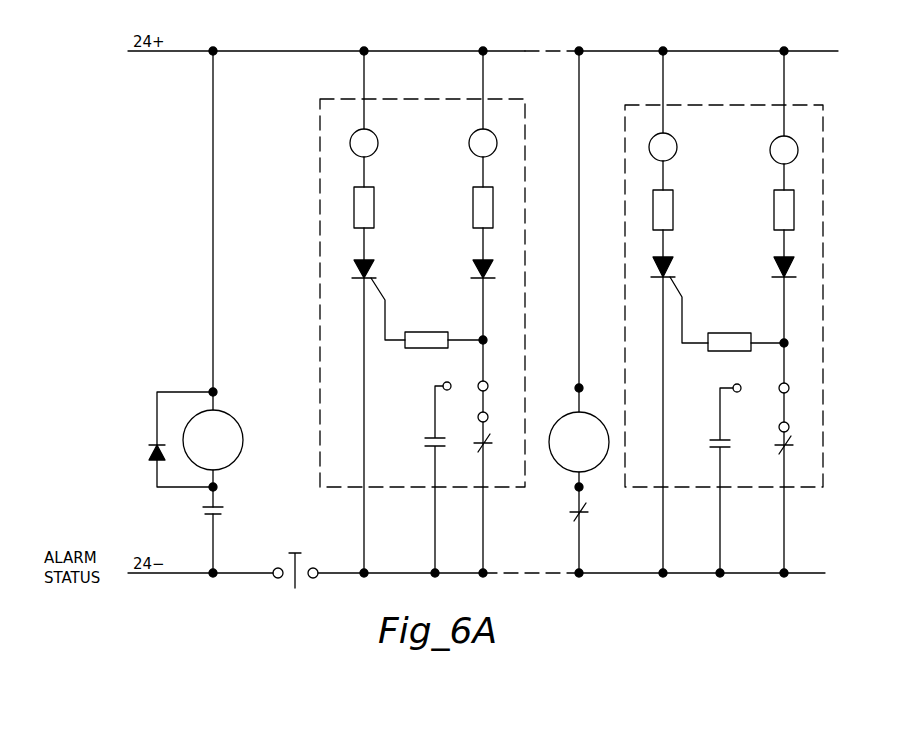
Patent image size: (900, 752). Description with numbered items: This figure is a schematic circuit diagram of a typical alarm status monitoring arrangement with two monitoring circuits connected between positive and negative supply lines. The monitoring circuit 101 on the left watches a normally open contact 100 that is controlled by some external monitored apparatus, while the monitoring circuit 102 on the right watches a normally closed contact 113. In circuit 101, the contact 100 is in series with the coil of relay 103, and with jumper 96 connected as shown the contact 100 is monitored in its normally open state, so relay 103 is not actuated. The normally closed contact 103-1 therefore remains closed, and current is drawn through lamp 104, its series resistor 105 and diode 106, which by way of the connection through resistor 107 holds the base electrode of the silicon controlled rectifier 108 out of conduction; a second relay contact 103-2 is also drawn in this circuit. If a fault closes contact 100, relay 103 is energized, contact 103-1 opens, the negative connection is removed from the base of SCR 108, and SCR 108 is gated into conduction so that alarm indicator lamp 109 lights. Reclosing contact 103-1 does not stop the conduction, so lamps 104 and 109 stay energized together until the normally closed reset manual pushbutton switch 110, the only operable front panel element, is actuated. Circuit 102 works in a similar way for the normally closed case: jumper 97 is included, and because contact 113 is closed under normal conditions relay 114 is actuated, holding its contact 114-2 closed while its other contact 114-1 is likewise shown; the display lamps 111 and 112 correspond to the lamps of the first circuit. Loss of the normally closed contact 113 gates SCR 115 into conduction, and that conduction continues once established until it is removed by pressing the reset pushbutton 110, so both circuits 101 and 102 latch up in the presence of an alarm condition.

The jumper 96 is at (486, 402).
The jumper 97 is at (774, 391).
The contact point 100 is at (224, 510).
The monitoring circuit 101 is at (320, 108).
The monitoring circuit 102 is at (823, 105).
The relay 103 is at (232, 412).
The normally closed contact 103-1 is at (494, 444).
The relay contact 103-2 is at (425, 440).
The lamp 104 is at (470, 140).
The resistor 105 is at (473, 205).
The diode 106 is at (476, 264).
The resistor 107 is at (432, 332).
The silicon controlled rectifier 108 is at (354, 268).
The alarm indicator lamp 109 is at (378, 146).
The reset manual pushbutton switch 110 is at (295, 553).
The lamp 111 is at (770, 149).
The lamp 112 is at (676, 140).
The normally closed contact 113 is at (587, 515).
The relay 114 is at (574, 488).
The relay contact 114-1 is at (790, 446).
The relay contact 114-2 is at (710, 443).
The silicon controlled rectifier 115 is at (672, 270).